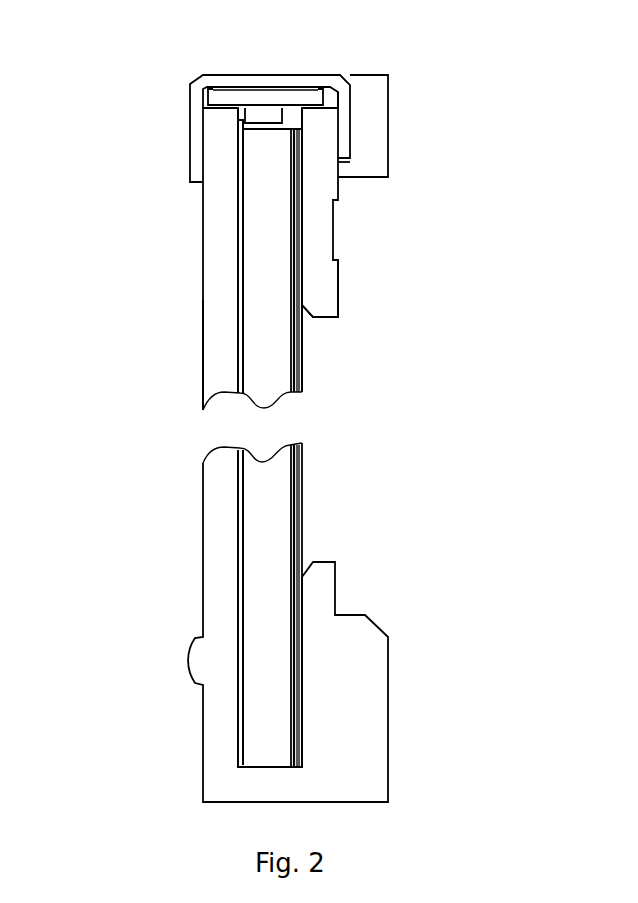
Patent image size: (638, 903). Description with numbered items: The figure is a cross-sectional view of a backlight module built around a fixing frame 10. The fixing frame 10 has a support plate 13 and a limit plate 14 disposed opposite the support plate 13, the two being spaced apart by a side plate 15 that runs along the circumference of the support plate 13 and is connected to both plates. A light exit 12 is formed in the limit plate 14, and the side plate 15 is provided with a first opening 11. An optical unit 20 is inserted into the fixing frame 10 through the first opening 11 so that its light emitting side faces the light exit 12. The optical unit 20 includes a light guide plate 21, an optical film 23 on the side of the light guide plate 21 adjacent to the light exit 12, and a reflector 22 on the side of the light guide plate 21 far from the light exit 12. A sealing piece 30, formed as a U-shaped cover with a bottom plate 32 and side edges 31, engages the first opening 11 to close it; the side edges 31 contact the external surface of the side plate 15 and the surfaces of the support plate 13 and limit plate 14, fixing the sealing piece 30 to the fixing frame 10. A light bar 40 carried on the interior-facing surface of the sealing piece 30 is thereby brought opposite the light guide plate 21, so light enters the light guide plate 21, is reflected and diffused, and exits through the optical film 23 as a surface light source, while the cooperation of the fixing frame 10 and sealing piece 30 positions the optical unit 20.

The fixing frame 10 is at (368, 447).
The first opening 11 is at (379, 204).
The light exit 12 is at (385, 354).
The support plate 13 is at (336, 379).
The limit plate 14 is at (385, 304).
The side plate 15 is at (353, 632).
The optical unit 20 is at (165, 437).
The light guide plate 21 is at (191, 443).
The reflector 22 is at (160, 437).
The optical film 23 is at (189, 448).
The sealing piece 30 is at (361, 159).
The side edges 31 is at (198, 150).
The bottom plate 32 is at (382, 133).
The light bar 40 is at (209, 82).